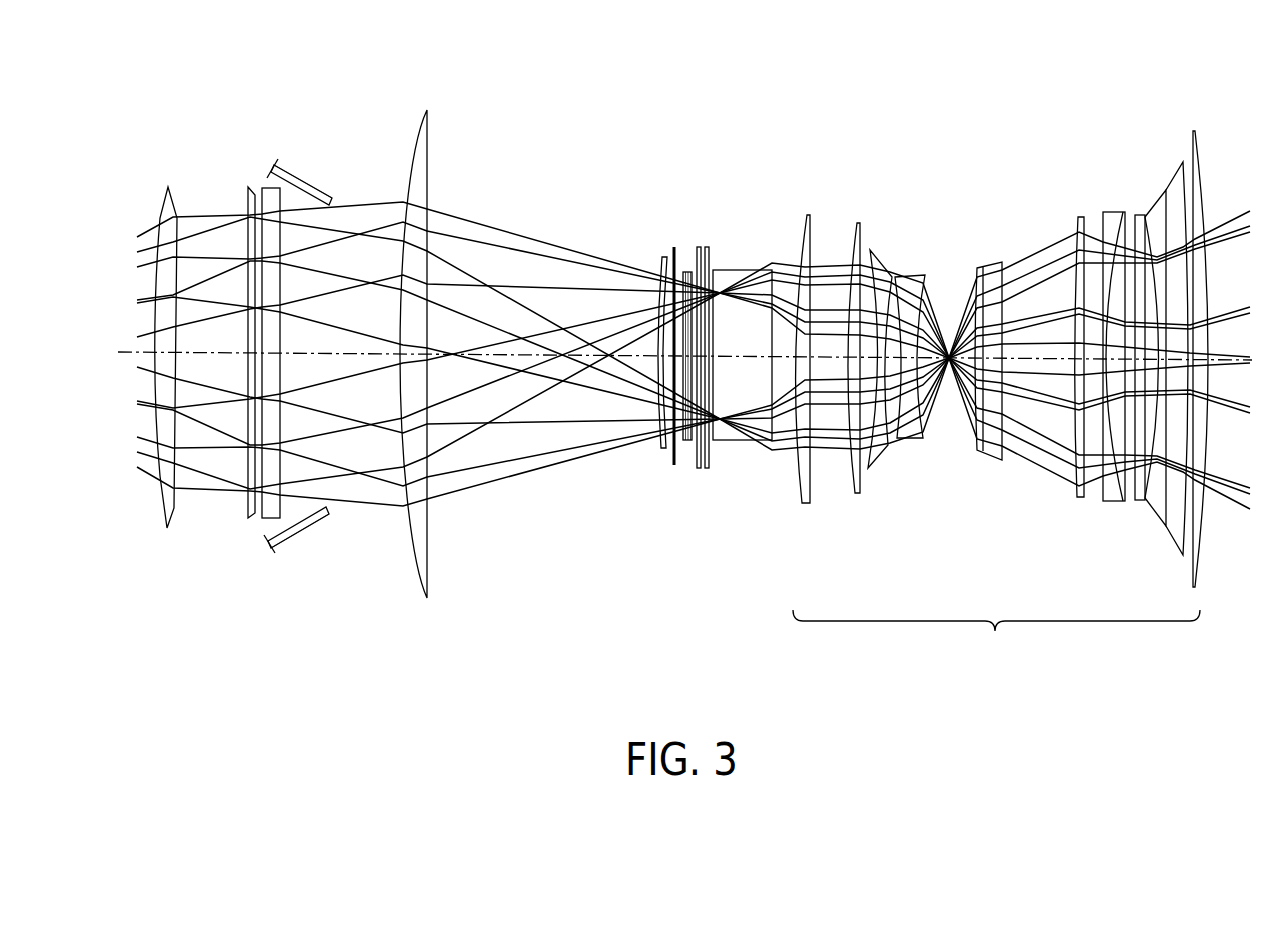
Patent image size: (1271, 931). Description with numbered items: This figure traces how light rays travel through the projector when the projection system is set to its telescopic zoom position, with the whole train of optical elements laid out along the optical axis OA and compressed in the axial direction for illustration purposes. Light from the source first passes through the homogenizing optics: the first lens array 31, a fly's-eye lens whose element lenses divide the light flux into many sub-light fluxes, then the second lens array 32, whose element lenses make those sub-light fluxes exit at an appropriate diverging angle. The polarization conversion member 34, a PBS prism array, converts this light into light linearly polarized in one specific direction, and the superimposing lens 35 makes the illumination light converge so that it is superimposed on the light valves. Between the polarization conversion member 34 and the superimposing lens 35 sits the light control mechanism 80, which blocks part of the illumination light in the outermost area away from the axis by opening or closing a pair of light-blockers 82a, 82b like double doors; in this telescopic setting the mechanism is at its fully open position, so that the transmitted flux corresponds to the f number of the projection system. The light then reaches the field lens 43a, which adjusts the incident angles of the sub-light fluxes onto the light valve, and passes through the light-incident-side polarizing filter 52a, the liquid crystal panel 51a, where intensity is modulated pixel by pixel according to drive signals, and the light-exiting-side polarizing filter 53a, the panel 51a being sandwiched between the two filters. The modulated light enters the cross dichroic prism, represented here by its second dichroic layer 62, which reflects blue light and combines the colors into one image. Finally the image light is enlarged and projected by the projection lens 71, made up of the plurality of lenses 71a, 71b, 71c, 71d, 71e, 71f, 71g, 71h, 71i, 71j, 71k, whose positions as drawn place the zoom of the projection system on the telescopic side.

The first lens array 31 is at (167, 529).
The second lens array 32 is at (252, 530).
The polarization conversion member 34 is at (266, 190).
The superimposing lens 35 is at (422, 599).
The light control mechanism 80 is at (283, 572).
The light-blocker 82a is at (300, 178).
The light-blocker 82b is at (298, 528).
The optical axis OA is at (524, 362).
The field lens 43a is at (662, 450).
The light-incident-side polarizing filter 52a is at (678, 247).
The liquid crystal panel 51a is at (686, 445).
The light-exiting-side polarizing filter 53a is at (699, 475).
The second dichroic layer 62 is at (747, 445).
The projection lens 71 is at (996, 641).
The lens 71a is at (806, 214).
The lens 71b is at (857, 222).
The lens 71c is at (873, 249).
The lens 71d is at (912, 274).
The lens 71e is at (980, 266).
The lens 71f is at (1080, 215).
The lens 71g is at (1104, 211).
The lens 71h is at (1137, 214).
The lens 71i is at (1147, 215).
The lens 71j is at (1176, 168).
The lens 71k is at (1193, 130).